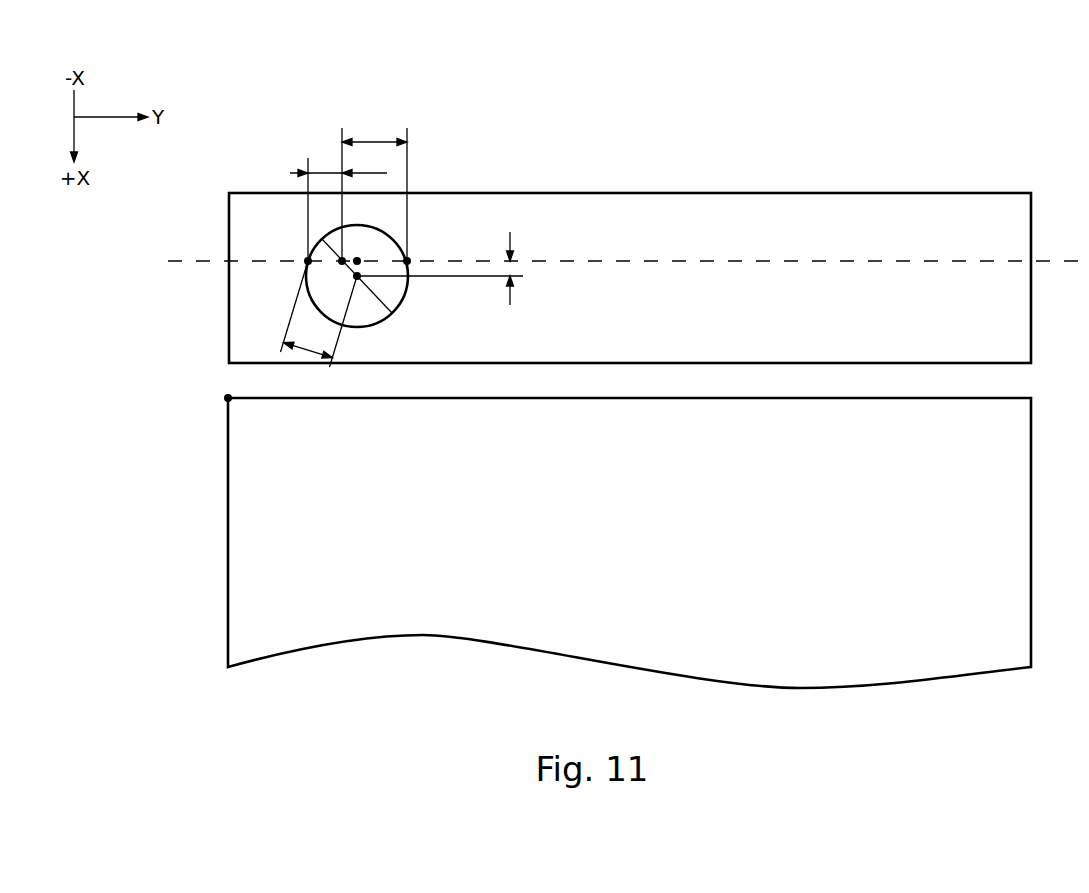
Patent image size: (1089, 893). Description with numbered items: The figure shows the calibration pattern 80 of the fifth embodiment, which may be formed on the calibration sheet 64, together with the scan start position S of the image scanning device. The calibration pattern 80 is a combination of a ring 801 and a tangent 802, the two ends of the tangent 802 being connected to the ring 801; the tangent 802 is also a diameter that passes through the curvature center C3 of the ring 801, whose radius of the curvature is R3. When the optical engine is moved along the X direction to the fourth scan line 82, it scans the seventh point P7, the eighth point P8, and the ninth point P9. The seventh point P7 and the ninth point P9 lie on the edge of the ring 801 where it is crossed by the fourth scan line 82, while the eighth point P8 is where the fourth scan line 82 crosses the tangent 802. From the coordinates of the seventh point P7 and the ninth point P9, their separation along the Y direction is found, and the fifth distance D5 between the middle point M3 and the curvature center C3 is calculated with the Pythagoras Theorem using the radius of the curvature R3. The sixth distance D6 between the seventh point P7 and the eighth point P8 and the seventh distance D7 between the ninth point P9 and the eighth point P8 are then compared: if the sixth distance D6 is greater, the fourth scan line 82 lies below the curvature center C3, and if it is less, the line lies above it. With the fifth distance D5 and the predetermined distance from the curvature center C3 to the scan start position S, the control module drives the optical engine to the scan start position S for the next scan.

The calibration sheet 64 is at (883, 193).
The fourth scan line 82 is at (611, 262).
The calibration pattern 80 is at (508, 94).
The ring 801 is at (407, 261).
The tangent 802 is at (327, 237).
The curvature center C3 is at (357, 278).
The radius of the curvature R3 is at (319, 314).
The seventh point P7 is at (308, 261).
The eighth point P8 is at (342, 261).
The middle point M3 is at (357, 261).
The ninth point P9 is at (410, 238).
The fifth distance D5 is at (440, 263).
The sixth distance D6 is at (338, 194).
The seventh distance D7 is at (374, 188).
The scan start position S is at (220, 388).